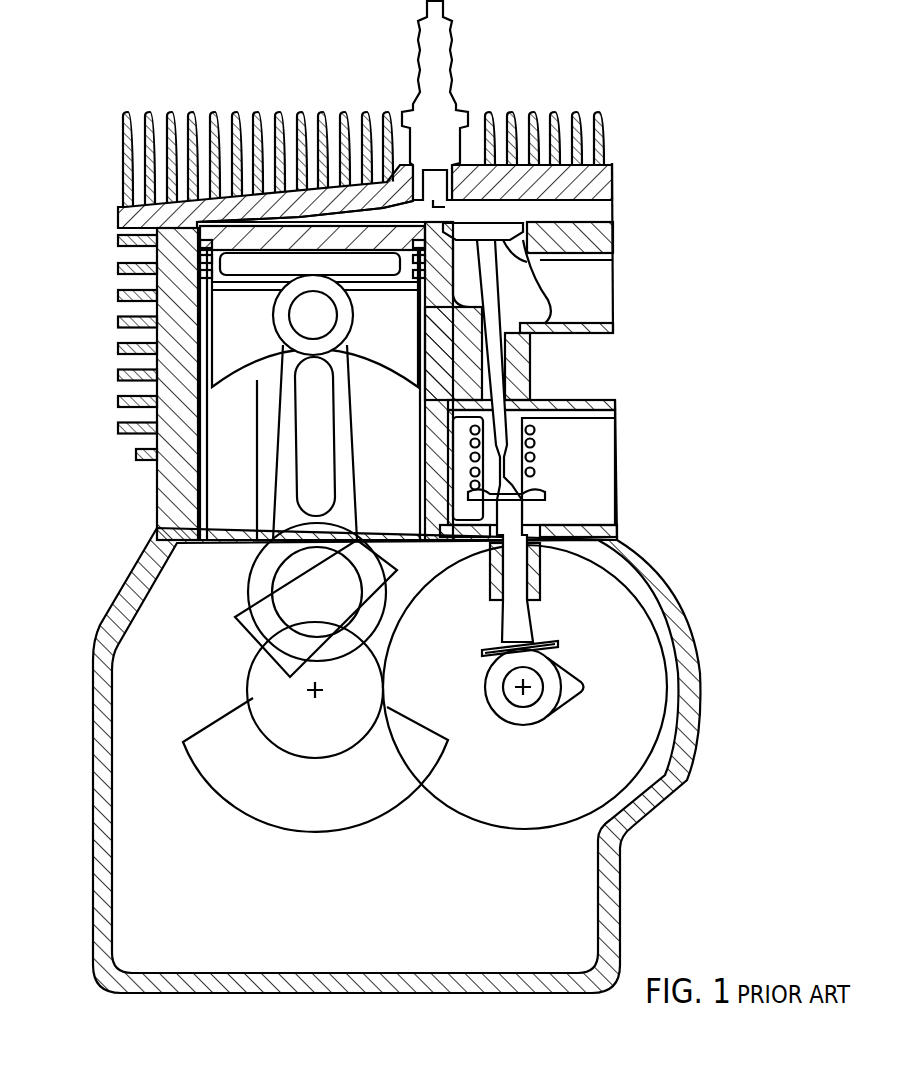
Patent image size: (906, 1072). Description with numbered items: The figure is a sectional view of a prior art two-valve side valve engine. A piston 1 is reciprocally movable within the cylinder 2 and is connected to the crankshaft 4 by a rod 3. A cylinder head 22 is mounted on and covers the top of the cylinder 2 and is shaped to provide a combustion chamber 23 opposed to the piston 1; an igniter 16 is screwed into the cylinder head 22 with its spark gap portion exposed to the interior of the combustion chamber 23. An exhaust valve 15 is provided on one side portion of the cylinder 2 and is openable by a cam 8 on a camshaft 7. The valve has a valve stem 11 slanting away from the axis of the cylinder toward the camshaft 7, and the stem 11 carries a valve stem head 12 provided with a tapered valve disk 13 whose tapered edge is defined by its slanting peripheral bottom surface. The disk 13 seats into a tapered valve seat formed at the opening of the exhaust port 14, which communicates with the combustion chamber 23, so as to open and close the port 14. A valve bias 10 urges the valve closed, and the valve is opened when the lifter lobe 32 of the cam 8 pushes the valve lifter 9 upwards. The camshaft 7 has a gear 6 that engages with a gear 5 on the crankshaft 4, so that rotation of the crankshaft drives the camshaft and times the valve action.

The piston 1 is at (157, 258).
The cylinder 2 is at (170, 343).
The rod 3 is at (270, 458).
The crankshaft 4 is at (287, 700).
The gear 5 is at (333, 760).
The gear 6 is at (514, 829).
The camshaft 7 is at (530, 698).
The cam 8 is at (568, 700).
The valve lifter 9 is at (558, 645).
The valve bias 10 is at (536, 460).
The valve stem 11 is at (495, 372).
The valve stem head 12 is at (516, 264).
The tapered valve disk 13 is at (600, 215).
The exhaust port 14 is at (590, 272).
The exhaust valve 15 is at (545, 205).
The igniter 16 is at (453, 38).
The cylinder head 22 is at (118, 208).
The combustion chamber 23 is at (372, 132).
The lifter lobe 32 is at (583, 687).